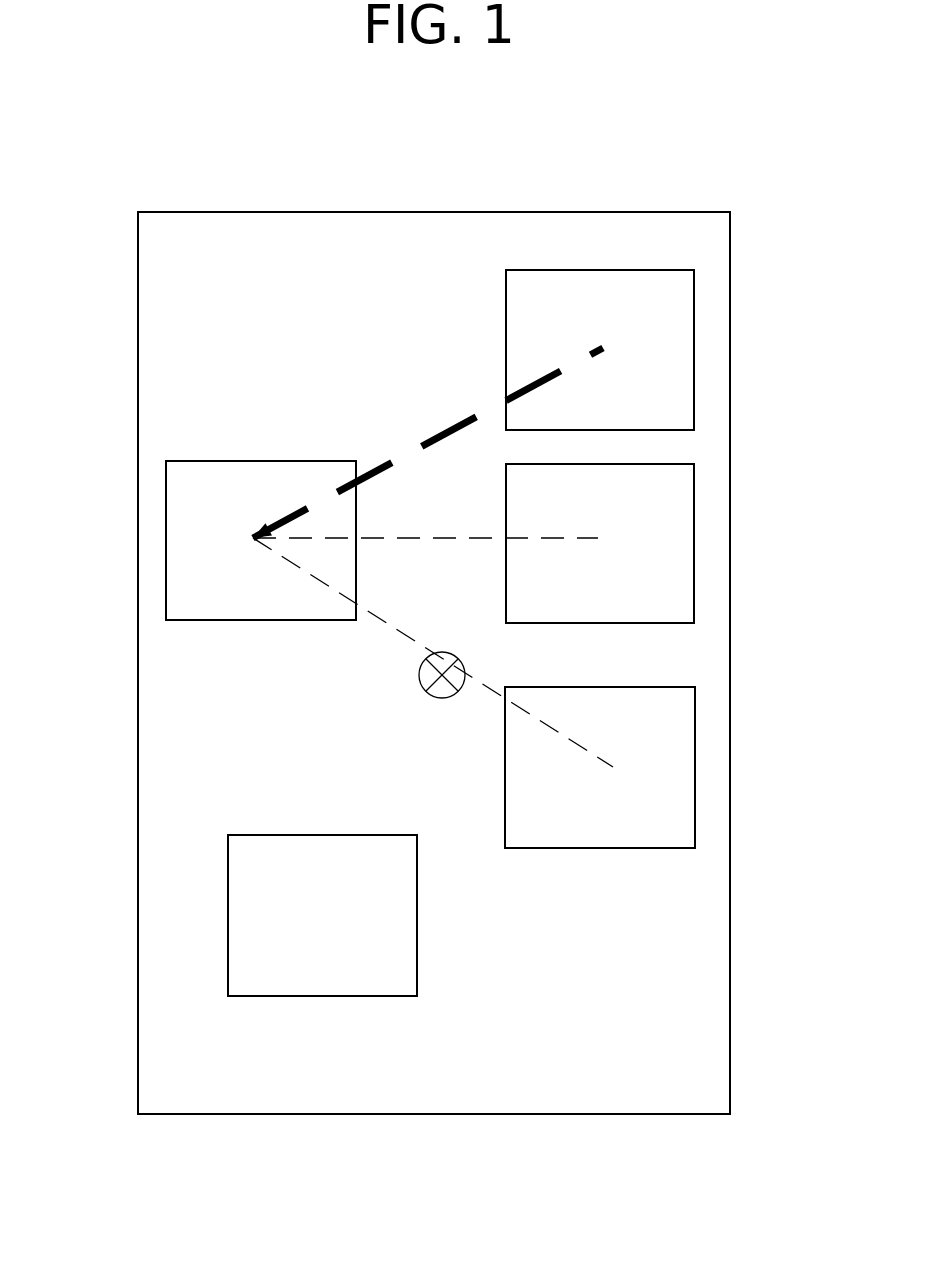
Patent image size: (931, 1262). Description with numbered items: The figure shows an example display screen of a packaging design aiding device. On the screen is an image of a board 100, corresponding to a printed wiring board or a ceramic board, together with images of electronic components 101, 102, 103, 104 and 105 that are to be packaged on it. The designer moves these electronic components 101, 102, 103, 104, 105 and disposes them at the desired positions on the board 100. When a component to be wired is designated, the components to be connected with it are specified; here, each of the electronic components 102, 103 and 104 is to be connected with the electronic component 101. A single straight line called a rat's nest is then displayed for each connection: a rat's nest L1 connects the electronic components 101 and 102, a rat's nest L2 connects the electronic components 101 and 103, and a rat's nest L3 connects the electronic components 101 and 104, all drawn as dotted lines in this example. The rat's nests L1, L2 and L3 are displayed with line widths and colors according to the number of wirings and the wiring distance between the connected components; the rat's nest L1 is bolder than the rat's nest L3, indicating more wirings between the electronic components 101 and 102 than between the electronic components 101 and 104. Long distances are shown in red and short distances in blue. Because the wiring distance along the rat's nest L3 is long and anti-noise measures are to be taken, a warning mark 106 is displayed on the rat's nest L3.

The board 100 is at (681, 212).
The electronic component 101 is at (176, 462).
The electronic component 102 is at (694, 323).
The electronic component 103 is at (694, 497).
The electronic component 104 is at (695, 737).
The electronic component 105 is at (278, 835).
The warning mark 106 is at (436, 698).
The rat's nest L1 is at (426, 440).
The rat's nest L2 is at (410, 540).
The rat's nest L3 is at (380, 620).